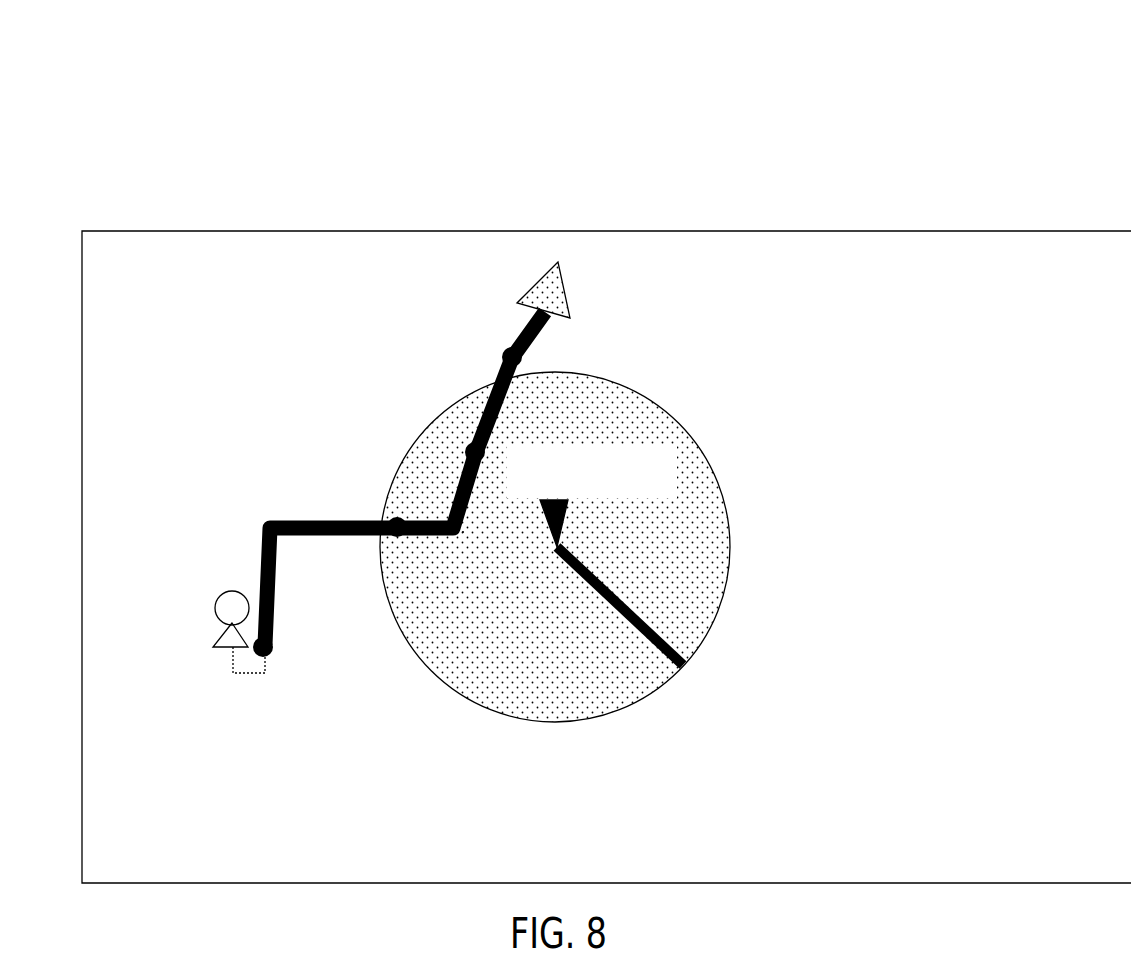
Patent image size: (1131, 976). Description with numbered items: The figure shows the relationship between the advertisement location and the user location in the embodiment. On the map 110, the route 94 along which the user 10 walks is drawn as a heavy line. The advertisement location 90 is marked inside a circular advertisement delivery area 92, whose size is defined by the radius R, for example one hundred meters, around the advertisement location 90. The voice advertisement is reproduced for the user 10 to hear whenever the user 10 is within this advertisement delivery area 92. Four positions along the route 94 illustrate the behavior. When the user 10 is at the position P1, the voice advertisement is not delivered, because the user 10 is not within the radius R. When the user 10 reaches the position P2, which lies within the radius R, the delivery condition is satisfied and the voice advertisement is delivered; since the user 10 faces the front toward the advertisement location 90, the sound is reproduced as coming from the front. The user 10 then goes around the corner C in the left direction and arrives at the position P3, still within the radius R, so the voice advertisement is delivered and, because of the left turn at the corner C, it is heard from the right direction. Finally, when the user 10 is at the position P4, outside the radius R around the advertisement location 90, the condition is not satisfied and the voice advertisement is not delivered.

The map 110 is at (955, 229).
The user 10 is at (223, 587).
The route 94 is at (323, 540).
The advertisement delivery area 92 is at (675, 418).
The advertisement location 90 is at (563, 540).
The position P1 is at (277, 653).
The position P2 is at (390, 515).
The position P3 is at (483, 443).
The position P4 is at (500, 350).
The corner C is at (463, 532).
The radius R is at (563, 547).